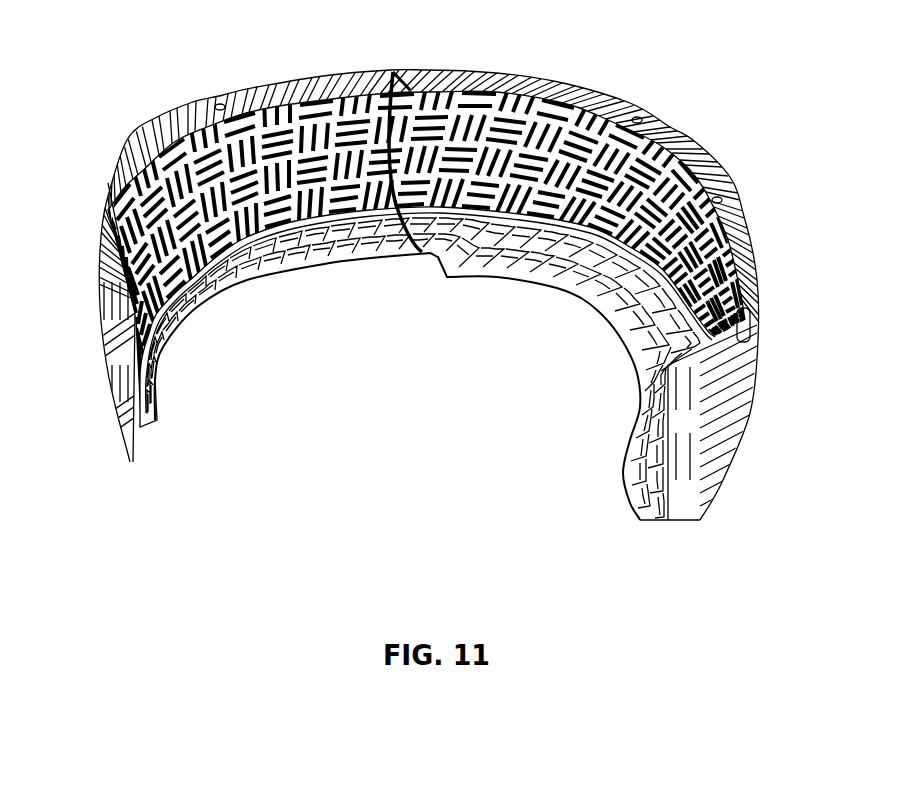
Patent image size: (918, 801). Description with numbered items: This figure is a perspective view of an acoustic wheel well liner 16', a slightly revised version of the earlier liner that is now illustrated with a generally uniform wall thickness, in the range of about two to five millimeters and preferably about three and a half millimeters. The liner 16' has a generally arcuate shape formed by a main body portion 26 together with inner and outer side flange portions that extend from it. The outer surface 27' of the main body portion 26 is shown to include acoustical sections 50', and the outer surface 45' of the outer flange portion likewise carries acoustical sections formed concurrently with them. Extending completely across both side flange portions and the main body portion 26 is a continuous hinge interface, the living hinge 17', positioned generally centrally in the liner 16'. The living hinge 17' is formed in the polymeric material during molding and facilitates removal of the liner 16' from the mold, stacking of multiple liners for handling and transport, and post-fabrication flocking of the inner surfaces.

The acoustic liner 16' is at (424, 276).
The living hinge 17' is at (379, 136).
The main body portion 26 is at (750, 318).
The outer surface 27' is at (424, 357).
The outer surface 45' is at (428, 270).
The acoustical sections 50' is at (445, 261).